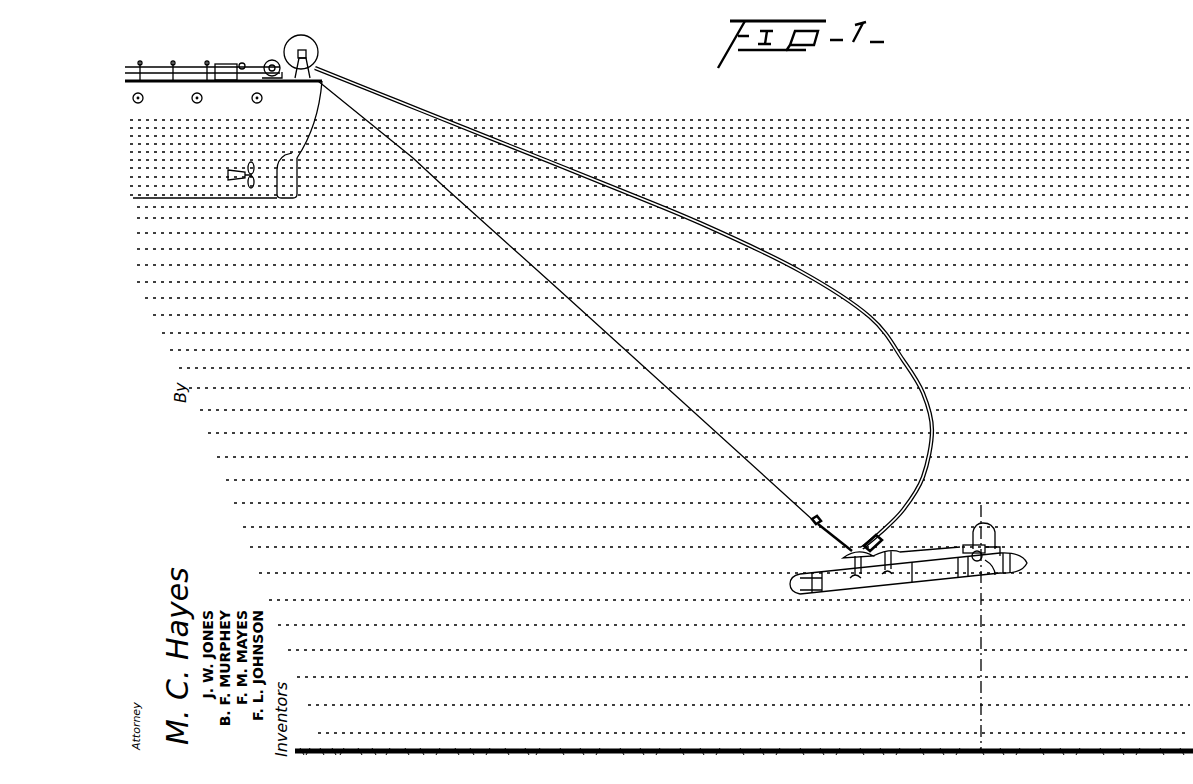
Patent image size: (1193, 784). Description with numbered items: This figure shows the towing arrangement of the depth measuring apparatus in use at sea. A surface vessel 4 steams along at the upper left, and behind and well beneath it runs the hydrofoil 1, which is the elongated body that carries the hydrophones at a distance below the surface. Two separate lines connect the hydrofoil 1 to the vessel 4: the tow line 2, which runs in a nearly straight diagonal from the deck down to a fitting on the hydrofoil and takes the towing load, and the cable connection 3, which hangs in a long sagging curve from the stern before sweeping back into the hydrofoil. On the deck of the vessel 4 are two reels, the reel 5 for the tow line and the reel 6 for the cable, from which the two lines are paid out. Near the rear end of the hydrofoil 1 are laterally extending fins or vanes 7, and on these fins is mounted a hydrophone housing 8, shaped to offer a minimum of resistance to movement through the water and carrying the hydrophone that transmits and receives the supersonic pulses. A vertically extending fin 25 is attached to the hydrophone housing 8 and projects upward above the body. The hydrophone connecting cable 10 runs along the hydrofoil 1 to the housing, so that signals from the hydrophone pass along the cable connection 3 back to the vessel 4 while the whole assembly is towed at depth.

The hydrofoil 1 is at (928, 583).
The tow line 2 is at (596, 326).
The cable connection 3 is at (897, 347).
The vessel 4 is at (158, 92).
The reel 5 is at (268, 60).
The reel 6 is at (309, 48).
The fins or vanes 7 is at (988, 566).
The hydrophone housing 8 is at (982, 550).
The hydrophone connecting cable 10 is at (935, 561).
The vertically extending fin 25 is at (981, 523).